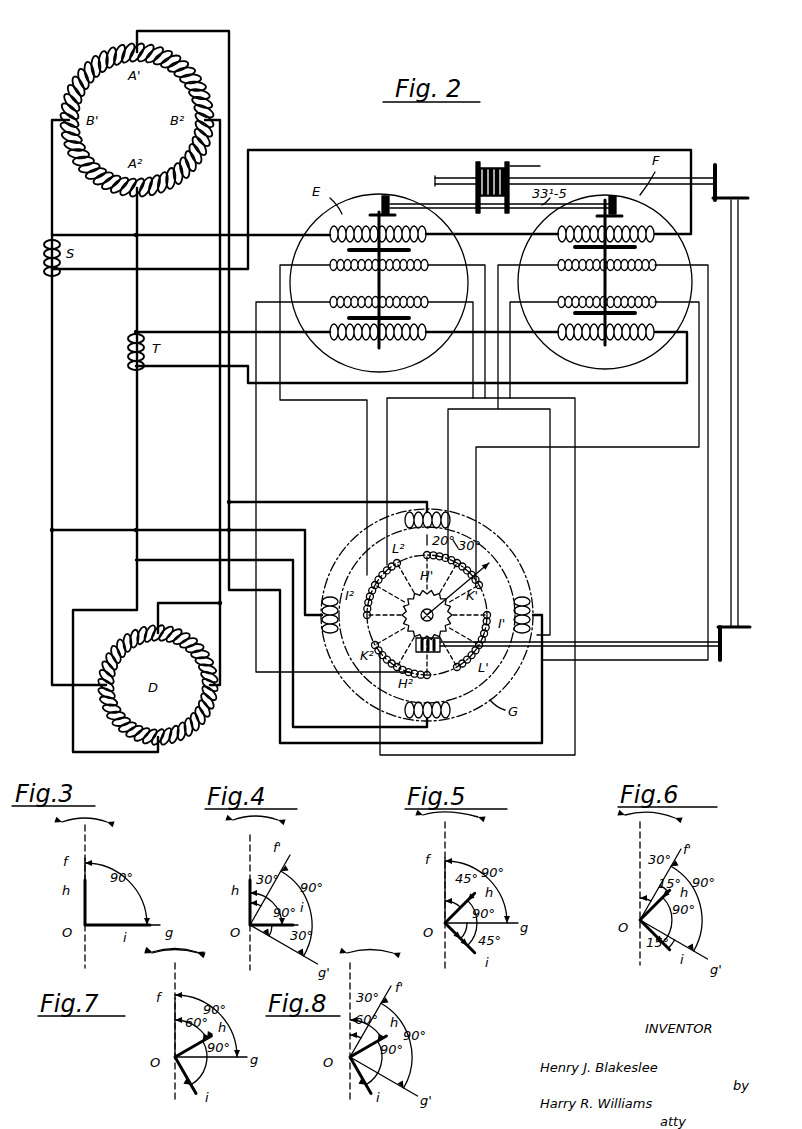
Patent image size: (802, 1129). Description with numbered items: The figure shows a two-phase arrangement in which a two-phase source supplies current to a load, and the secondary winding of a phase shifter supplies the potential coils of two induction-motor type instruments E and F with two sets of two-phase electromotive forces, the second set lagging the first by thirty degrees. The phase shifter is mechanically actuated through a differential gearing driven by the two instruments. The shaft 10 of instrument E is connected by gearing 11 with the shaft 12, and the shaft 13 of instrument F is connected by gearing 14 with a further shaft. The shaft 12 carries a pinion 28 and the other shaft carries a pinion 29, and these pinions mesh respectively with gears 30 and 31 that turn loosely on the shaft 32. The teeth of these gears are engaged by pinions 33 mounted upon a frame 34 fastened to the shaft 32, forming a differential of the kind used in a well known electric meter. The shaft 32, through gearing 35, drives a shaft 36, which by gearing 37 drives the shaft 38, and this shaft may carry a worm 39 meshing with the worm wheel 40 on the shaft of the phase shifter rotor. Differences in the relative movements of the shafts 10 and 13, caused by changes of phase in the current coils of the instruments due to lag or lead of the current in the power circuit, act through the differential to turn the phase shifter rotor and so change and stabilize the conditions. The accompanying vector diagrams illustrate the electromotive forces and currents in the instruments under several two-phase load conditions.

The shaft 10 is at (395, 283).
The gearing 11 is at (400, 212).
The shaft 12 is at (430, 178).
The shaft 13 is at (618, 285).
The gearing 14 is at (622, 213).
The pinion 28 is at (472, 214).
The pinion 29 is at (511, 214).
The gear 30 is at (476, 175).
The gear 31 is at (527, 159).
The shaft 32 is at (587, 178).
The pinions 33 is at (490, 168).
The frame 34 is at (500, 168).
The gearing 35 is at (730, 182).
The shaft 36 is at (740, 445).
The gearing 37 is at (735, 643).
The shaft 38 is at (648, 642).
The worm 39 is at (437, 655).
The worm wheel 40 is at (410, 618).